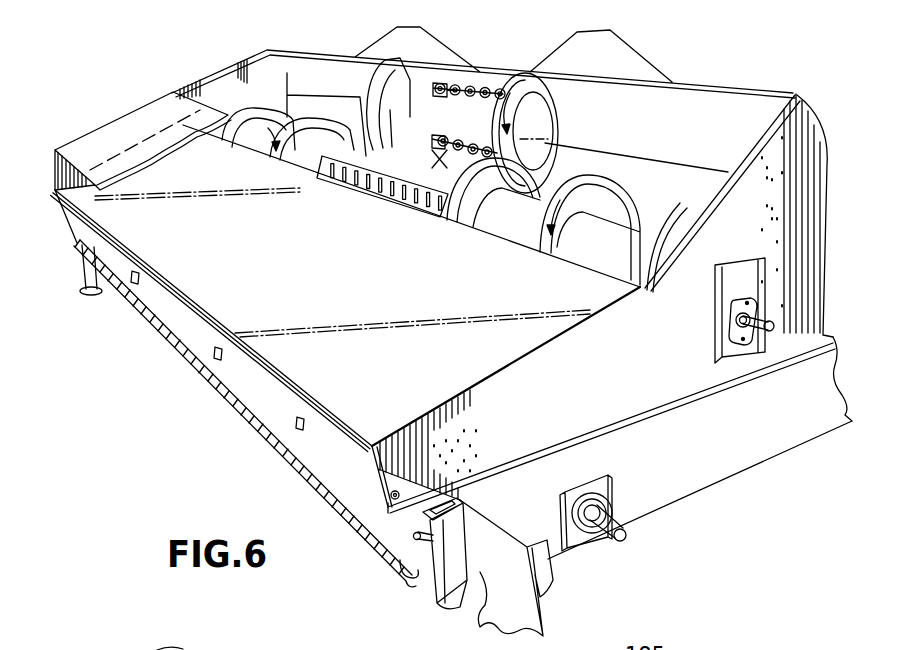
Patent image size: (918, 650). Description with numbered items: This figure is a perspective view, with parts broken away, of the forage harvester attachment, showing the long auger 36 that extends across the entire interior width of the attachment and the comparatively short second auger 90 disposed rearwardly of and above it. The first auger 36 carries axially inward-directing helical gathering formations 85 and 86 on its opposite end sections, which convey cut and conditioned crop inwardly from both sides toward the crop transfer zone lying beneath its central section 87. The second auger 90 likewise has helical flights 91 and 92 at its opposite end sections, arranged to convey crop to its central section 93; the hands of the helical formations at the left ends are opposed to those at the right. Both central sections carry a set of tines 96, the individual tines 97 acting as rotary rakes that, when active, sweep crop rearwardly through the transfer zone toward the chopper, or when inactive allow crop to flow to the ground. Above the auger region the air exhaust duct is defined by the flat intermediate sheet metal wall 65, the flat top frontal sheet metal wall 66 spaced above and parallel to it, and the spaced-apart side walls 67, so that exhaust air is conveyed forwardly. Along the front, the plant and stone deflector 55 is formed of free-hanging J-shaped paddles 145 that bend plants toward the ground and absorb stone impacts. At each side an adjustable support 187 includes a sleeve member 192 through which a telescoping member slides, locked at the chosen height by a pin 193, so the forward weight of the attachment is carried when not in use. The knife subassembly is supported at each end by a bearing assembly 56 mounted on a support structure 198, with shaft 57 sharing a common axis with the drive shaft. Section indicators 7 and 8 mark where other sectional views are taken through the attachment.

The top frontal sheet metal wall 66 is at (117, 137).
The auger 36 is at (277, 145).
The helical gathering formation 86 is at (302, 125).
The helical gathering formation 92 is at (380, 140).
The central section 87 is at (443, 112).
The central section 93 is at (473, 120).
The tine 97 is at (458, 90).
The second auger 90 is at (495, 85).
The helical gathering formation 91 is at (540, 98).
The helical gathering formation 85 is at (598, 188).
The set of tines 96 is at (397, 213).
The section line 7- 7 is at (329, 262).
The section line 8- 8 is at (273, 178).
The intermediate sheet metal wall 65 is at (140, 215).
The adjustable support 187 is at (74, 274).
The paddle 145 is at (247, 418).
The plant and stone deflector 55 is at (295, 478).
The side wall 67 is at (653, 377).
The support structure 198 is at (612, 485).
The bearing assembly 56 is at (632, 512).
The shaft 57 is at (625, 541).
The pin 193 is at (425, 517).
The sleeve member 192 is at (455, 558).